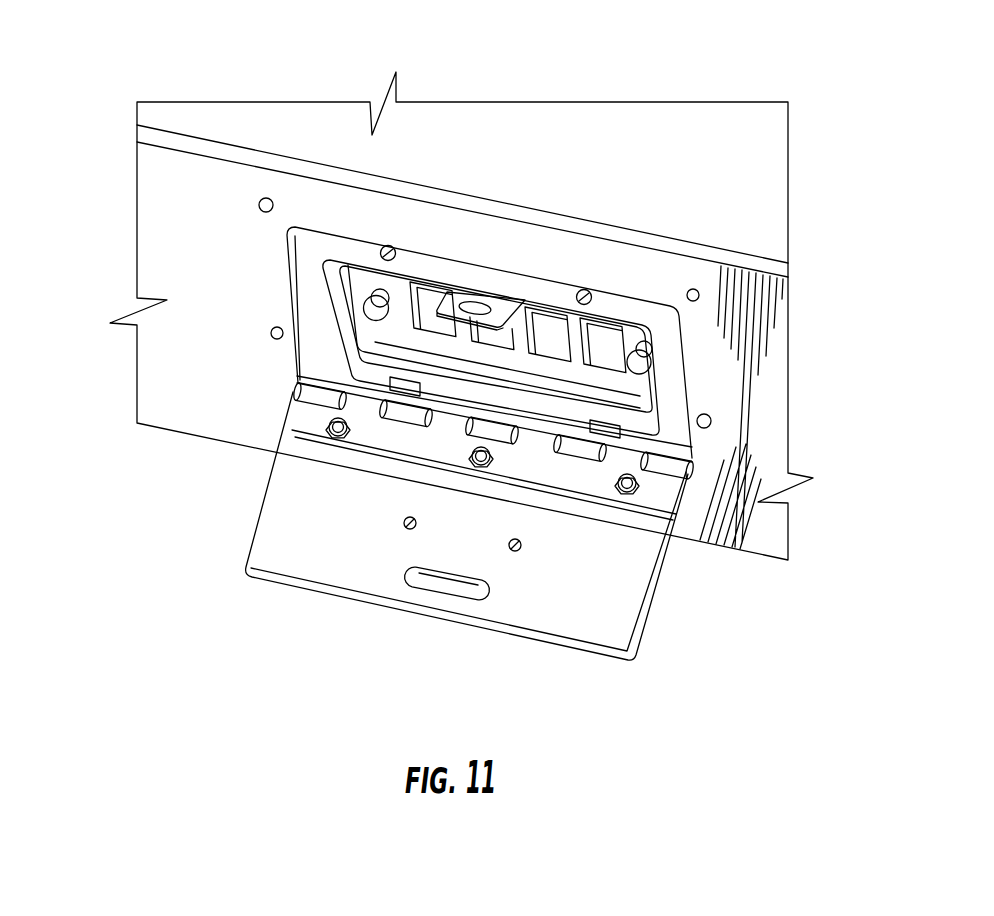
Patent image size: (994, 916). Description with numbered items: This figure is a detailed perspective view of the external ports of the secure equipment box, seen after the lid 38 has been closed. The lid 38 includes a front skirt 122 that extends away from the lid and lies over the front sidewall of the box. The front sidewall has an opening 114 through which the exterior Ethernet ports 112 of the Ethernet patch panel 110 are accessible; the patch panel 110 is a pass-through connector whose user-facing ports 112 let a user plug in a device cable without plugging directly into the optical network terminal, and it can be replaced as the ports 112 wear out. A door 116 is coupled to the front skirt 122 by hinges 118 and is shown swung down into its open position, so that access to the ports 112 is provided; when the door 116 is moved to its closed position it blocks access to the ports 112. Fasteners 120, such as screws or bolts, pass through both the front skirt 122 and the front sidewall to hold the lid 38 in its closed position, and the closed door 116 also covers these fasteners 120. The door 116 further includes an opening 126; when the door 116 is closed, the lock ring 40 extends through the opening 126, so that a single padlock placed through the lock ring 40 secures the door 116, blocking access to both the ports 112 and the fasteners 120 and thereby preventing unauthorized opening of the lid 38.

The lid 38 is at (737, 249).
The lock ring 40 is at (461, 293).
The Ethernet patch panel 110 is at (432, 341).
The exterior Ethernet ports 112 is at (442, 325).
The opening 114 is at (650, 402).
The door 116 is at (302, 552).
The hinges 118 is at (293, 391).
The fasteners 120 is at (387, 246).
The front skirt 122 is at (150, 190).
The opening 126 is at (433, 585).